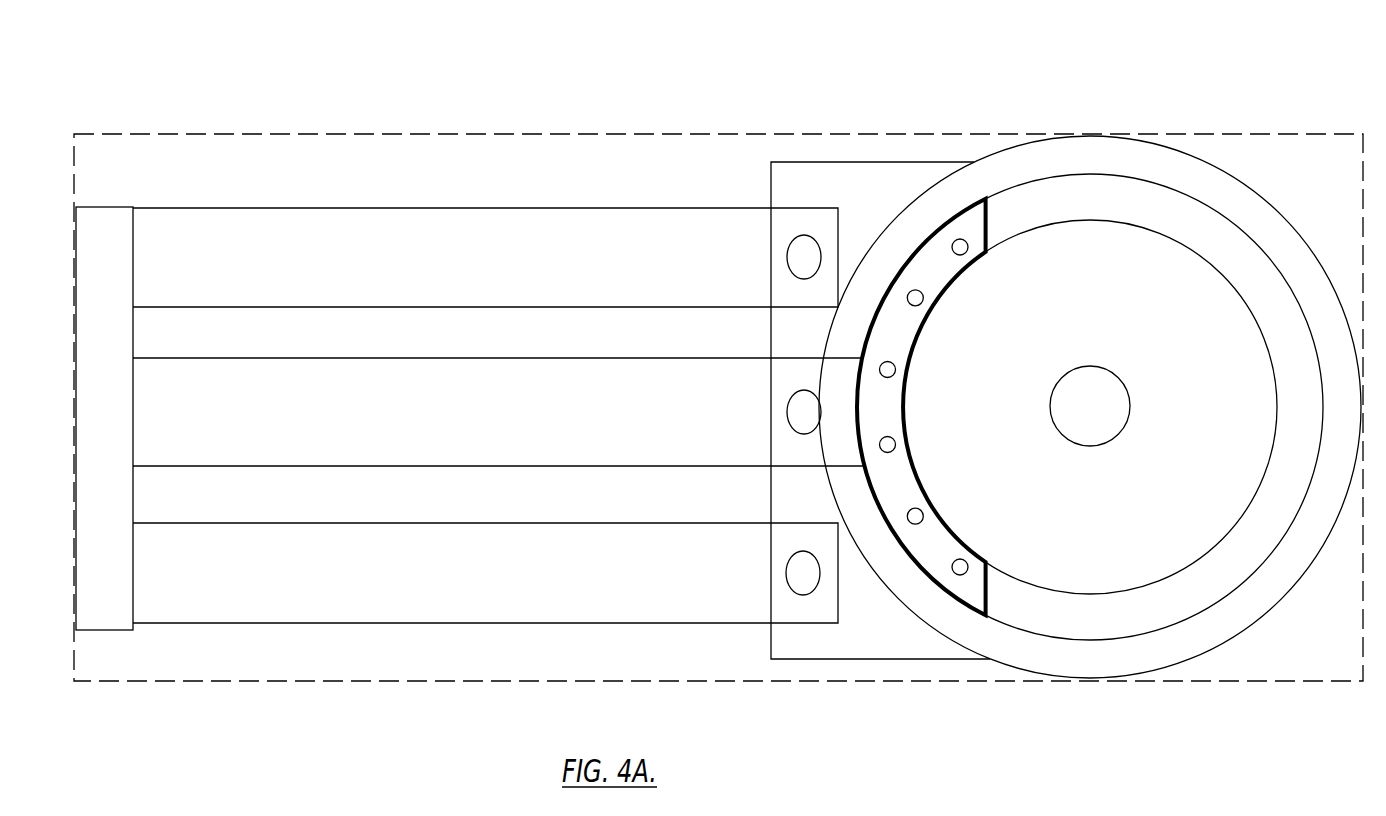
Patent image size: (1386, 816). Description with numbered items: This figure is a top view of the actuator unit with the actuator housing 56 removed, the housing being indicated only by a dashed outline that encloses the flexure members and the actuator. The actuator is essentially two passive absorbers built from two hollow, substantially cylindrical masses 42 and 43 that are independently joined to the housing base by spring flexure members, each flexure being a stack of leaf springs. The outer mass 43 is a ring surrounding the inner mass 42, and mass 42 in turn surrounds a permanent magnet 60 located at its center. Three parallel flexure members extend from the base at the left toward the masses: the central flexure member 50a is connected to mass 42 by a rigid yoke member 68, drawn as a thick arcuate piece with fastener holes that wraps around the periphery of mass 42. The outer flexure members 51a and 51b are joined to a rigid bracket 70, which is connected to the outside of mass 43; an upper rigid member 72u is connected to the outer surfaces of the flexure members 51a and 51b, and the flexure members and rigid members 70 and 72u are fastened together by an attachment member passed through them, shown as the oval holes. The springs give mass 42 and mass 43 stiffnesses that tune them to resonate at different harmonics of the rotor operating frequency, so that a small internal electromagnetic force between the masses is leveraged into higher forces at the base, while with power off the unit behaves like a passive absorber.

The actuator housing 56 is at (474, 134).
The spring flexure member 51a is at (392, 281).
The spring flexure member 50a is at (392, 435).
The spring flexure member 51b is at (392, 591).
The rigid bracket 70 is at (828, 177).
The upper rigid member 72u is at (782, 222).
The second cylindrical mass 43 is at (1157, 155).
The first cylindrical mass 42 is at (1215, 252).
The permanent magnet 60 is at (1108, 496).
The rigid yoke member 68 is at (927, 265).